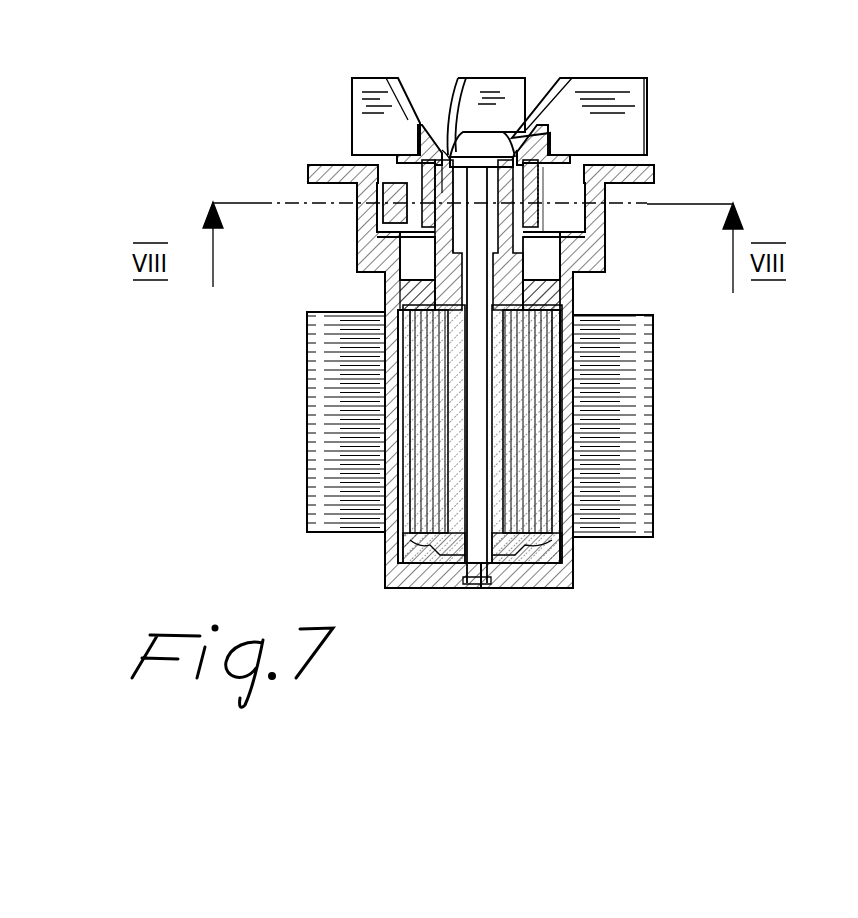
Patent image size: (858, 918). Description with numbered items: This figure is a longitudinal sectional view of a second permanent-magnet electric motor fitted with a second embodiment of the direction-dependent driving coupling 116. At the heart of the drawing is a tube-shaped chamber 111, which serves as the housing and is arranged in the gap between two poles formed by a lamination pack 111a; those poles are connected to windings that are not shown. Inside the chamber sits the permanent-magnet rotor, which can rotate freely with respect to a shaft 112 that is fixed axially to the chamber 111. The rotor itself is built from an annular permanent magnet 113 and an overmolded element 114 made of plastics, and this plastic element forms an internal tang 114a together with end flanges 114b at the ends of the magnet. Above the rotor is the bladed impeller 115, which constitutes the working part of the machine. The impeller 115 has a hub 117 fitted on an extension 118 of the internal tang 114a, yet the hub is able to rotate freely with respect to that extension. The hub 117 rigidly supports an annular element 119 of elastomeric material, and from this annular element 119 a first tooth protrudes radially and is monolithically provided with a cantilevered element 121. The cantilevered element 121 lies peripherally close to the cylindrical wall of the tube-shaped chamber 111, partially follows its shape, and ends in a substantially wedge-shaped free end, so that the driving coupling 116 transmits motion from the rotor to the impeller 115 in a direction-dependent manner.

The tube-shaped chamber 111 is at (481, 404).
The lamination pack 111a is at (544, 424).
The shaft 112 is at (346, 375).
The annular permanent magnet 113 is at (601, 447).
The overmolded element 114 is at (590, 421).
The internal tang 114a is at (320, 434).
The end flanges 114b is at (359, 476).
The bladed impeller 115 is at (668, 116).
The direction-dependent driving coupling 116 is at (680, 194).
The hub 117 is at (611, 279).
The extension 118 is at (385, 235).
The annular element 119 is at (636, 150).
The cantilevered element 121 is at (348, 157).